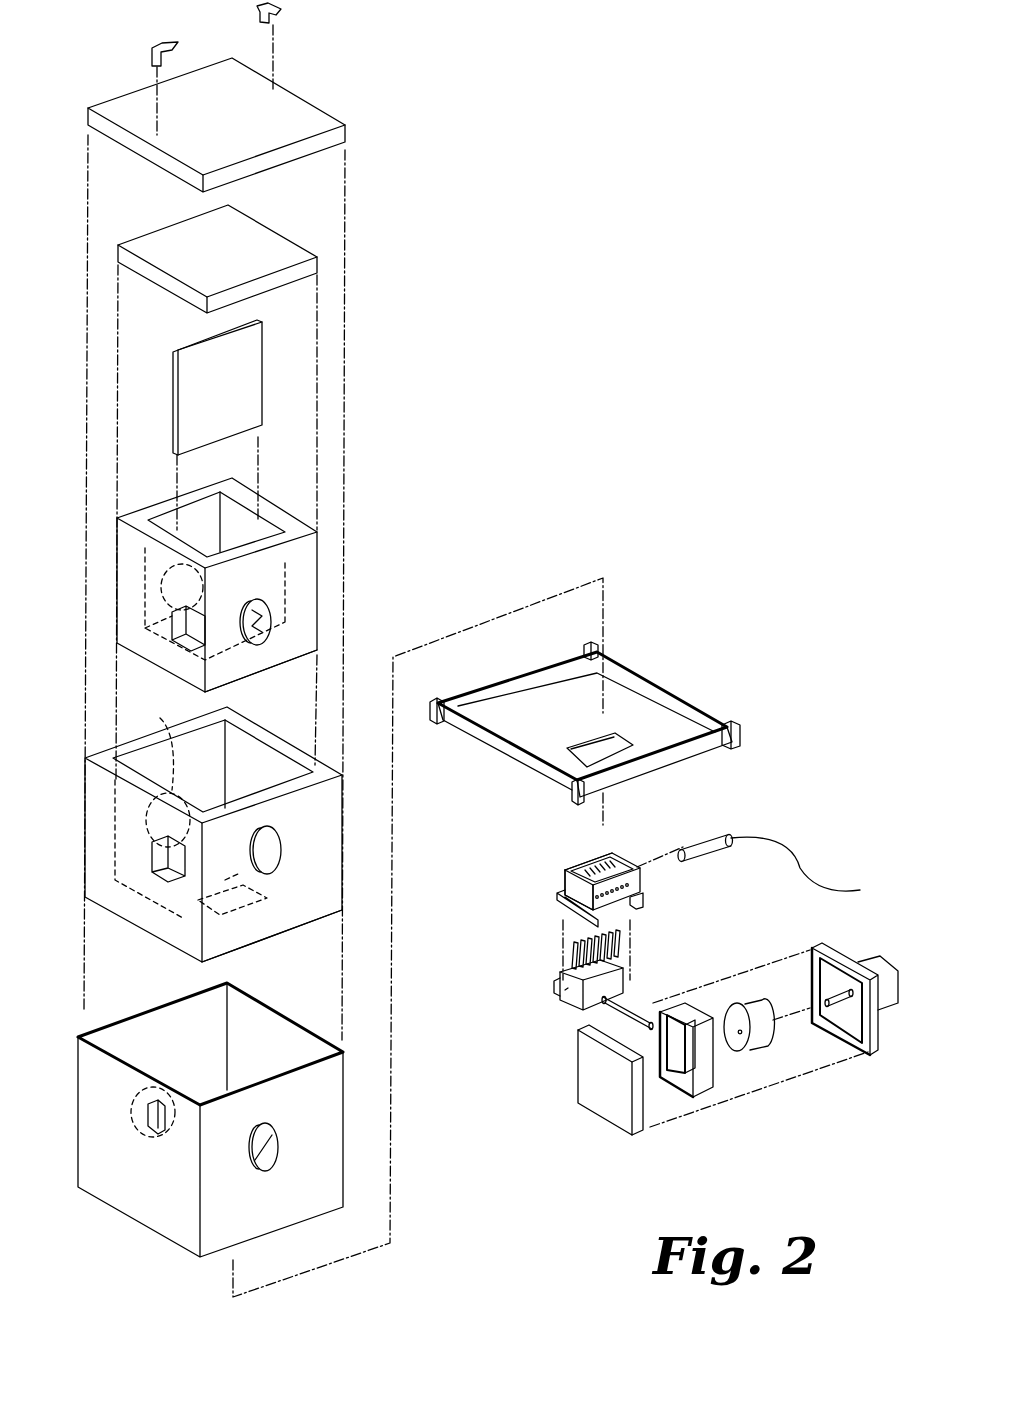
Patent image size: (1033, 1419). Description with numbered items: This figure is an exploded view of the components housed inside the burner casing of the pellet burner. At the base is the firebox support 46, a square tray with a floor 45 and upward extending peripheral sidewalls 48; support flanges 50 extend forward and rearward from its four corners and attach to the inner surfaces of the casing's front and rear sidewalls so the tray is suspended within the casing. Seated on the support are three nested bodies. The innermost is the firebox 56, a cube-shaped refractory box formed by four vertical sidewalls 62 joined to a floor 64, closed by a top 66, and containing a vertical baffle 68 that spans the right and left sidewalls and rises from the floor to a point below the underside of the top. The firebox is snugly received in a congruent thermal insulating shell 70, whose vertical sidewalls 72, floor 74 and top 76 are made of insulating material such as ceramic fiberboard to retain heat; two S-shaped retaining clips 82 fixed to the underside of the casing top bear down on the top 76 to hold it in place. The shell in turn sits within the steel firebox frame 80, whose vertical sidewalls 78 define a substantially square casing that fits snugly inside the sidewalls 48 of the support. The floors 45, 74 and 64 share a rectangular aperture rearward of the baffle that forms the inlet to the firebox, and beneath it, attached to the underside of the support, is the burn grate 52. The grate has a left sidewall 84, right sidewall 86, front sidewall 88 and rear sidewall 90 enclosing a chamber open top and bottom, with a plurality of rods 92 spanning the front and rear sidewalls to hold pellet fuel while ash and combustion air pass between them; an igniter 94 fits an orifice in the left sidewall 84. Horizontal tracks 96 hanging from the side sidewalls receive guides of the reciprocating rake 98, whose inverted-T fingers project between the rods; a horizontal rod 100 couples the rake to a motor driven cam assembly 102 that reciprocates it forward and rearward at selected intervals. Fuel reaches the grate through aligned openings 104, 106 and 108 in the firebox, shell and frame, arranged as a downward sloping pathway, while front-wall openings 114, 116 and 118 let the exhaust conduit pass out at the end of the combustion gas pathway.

The floor of firebox support 45 is at (548, 738).
The firebox support 46 is at (675, 665).
The peripheral sidewalls 48 is at (550, 677).
The support flanges 50 is at (431, 712).
The burn grate 52 is at (537, 940).
The firebox 56 is at (411, 488).
The vertical sidewalls 62 is at (145, 512).
The floor 64 is at (273, 672).
The top 66 is at (255, 262).
The vertical baffle 68 is at (228, 370).
The thermal insulating shell 70 is at (71, 802).
The vertical sidewalls 72 is at (102, 837).
The floor 74 is at (267, 938).
The top 76 is at (298, 115).
The vertical sidewalls 78 is at (158, 1193).
The firebox frame 80 is at (323, 1016).
The S-shaped retaining clips 82 is at (283, 15).
The left sidewall 84 is at (602, 867).
The right sidewall 86 is at (575, 890).
The front sidewall 88 is at (585, 862).
The rear sidewall 90 is at (627, 878).
The rods 92 is at (630, 915).
The igniter 94 is at (705, 838).
The horizontal tracks 96 is at (570, 922).
The reciprocating rake 98 is at (559, 1019).
The horizontal rod 100 is at (628, 1007).
The motor driven cam assembly 102 is at (620, 1150).
The opening 104 is at (268, 613).
The opening 106 is at (273, 842).
The opening 108 is at (278, 1133).
The opening 114 is at (152, 622).
The opening 116 is at (151, 741).
The opening 118 is at (130, 1138).